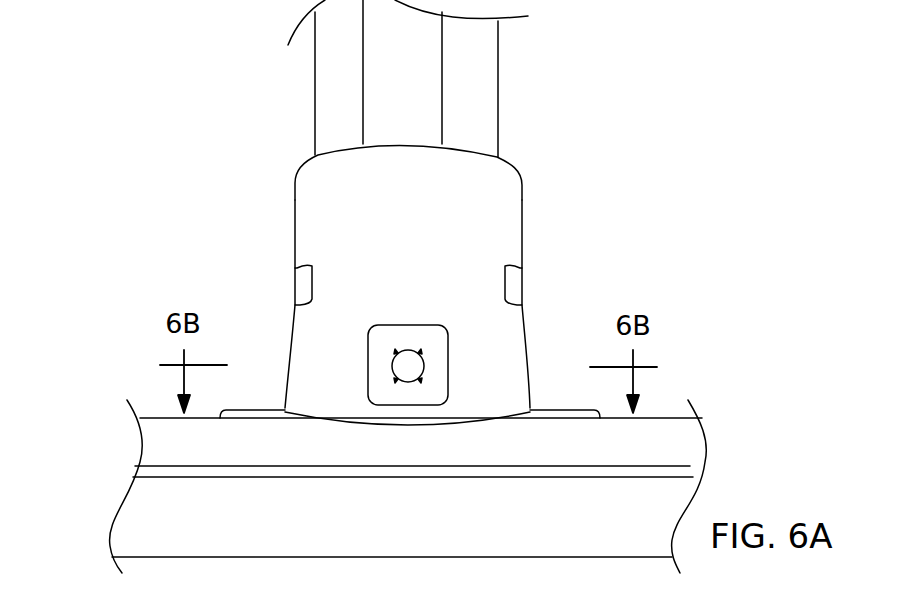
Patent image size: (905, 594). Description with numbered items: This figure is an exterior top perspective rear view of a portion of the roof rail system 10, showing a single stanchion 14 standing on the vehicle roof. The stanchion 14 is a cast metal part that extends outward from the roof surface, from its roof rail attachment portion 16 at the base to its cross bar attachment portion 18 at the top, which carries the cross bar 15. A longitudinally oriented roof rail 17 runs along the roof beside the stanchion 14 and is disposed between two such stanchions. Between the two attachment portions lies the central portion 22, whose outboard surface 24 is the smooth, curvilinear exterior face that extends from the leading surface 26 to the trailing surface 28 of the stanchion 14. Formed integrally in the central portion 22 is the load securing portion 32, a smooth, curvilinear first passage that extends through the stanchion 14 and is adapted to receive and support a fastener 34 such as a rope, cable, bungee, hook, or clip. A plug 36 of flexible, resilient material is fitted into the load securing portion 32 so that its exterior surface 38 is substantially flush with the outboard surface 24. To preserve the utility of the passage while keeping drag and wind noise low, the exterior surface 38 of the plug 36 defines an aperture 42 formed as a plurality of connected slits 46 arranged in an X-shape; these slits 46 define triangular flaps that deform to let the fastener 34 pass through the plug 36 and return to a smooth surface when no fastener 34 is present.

The roof rail system 10 is at (434, 260).
The stanchion 14 is at (330, 196).
The cross bar 15 is at (487, 49).
The roof rail attachment portion 16 is at (263, 412).
The roof rail 17 is at (668, 427).
The cross bar attachment portion 18 is at (482, 152).
The central portion 22 is at (297, 287).
The outboard surface 24 is at (503, 337).
The leading surface 26 is at (262, 243).
The trailing surface 28 is at (523, 193).
The load securing portion 32 is at (406, 375).
The fastener 34 is at (408, 375).
The plug 36 is at (398, 335).
The exterior surface 38 is at (380, 383).
The aperture 42 is at (395, 380).
The slits 46 is at (422, 354).